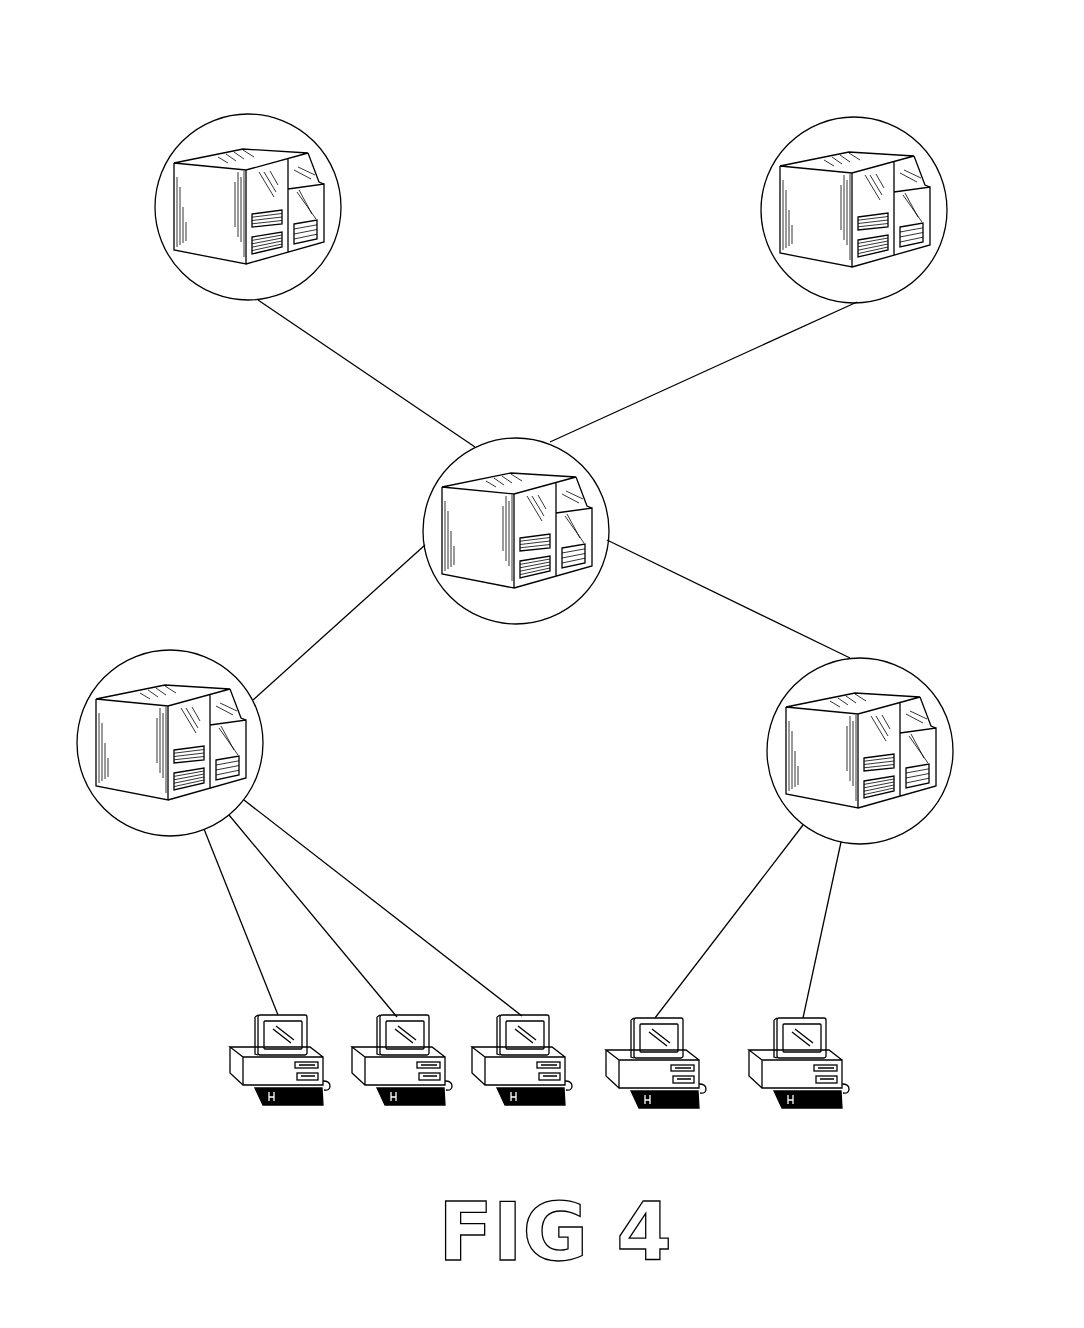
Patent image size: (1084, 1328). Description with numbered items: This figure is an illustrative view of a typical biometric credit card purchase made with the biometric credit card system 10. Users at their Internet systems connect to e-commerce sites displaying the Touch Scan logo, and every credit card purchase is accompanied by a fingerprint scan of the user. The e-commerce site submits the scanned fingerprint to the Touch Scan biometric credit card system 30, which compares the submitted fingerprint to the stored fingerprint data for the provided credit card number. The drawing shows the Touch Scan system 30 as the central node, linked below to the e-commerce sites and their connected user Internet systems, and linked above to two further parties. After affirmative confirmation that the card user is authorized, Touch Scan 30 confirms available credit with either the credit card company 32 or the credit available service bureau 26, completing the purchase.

The biometric credit card system 10 is at (522, 130).
The credit available service bureau 26 is at (857, 118).
The Touch Scan biometric credit card system 30 is at (513, 437).
The credit card company 32 is at (245, 114).